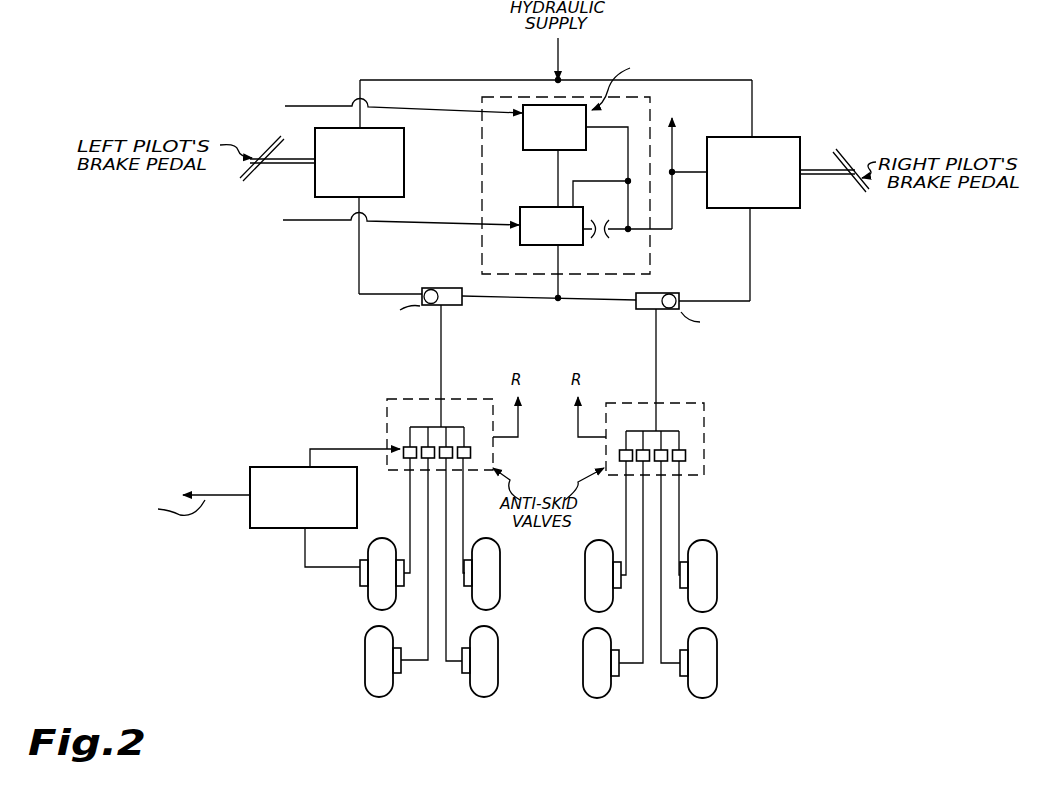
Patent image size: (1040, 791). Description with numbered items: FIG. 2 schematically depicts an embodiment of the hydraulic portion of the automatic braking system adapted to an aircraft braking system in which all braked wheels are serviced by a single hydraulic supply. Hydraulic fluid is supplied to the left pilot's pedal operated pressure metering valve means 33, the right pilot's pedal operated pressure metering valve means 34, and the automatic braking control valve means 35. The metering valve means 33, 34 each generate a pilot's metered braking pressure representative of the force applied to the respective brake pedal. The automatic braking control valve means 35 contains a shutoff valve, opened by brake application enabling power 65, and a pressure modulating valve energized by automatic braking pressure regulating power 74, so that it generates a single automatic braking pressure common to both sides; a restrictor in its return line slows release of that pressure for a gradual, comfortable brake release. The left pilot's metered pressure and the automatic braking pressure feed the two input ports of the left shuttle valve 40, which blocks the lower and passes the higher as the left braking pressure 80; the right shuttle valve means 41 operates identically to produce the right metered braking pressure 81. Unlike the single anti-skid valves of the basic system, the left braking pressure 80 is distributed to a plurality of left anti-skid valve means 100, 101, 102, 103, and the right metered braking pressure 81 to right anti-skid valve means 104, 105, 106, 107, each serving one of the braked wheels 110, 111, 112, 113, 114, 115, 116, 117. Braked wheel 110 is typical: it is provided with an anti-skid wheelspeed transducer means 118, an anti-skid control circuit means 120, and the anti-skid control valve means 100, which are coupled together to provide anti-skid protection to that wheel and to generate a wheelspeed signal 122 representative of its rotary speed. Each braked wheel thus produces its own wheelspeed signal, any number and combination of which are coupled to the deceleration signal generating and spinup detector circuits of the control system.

The left pilot's pedal operated pressure metering valve means 33 is at (315, 186).
The right pilot's pedal operated pressure metering valve means 34 is at (790, 208).
The automatic braking control valve means 35 is at (652, 98).
The left shuttle valve 40 is at (455, 306).
The right shuttle valve means 41 is at (650, 310).
The brake application enabling power 65 is at (324, 107).
The automatic braking pressure regulating power 74 is at (320, 221).
The left braking pressure 80 is at (441, 355).
The right metered braking pressure 81 is at (656, 358).
The anti-skid control valve means 100 is at (402, 447).
The left anti-skid valve means 101 is at (426, 460).
The left anti-skid valve means 102 is at (446, 460).
The left anti-skid valve means 103 is at (471, 453).
The right anti-skid valve means 104 is at (619, 455).
The right anti-skid valve means 105 is at (643, 462).
The right anti-skid valve means 106 is at (664, 462).
The right anti-skid valve means 107 is at (686, 455).
The braked wheel 110 is at (390, 607).
The braked wheel 111 is at (385, 694).
The braked wheel 112 is at (490, 694).
The braked wheel 113 is at (498, 605).
The braked wheel 114 is at (587, 545).
The braked wheel 115 is at (585, 693).
The braked wheel 116 is at (712, 694).
The braked wheel 117 is at (714, 546).
The anti-skid wheelspeed transducer means 118 is at (361, 587).
The anti-skid control circuit means 120 is at (266, 528).
The wheelspeed signal 122 is at (222, 494).